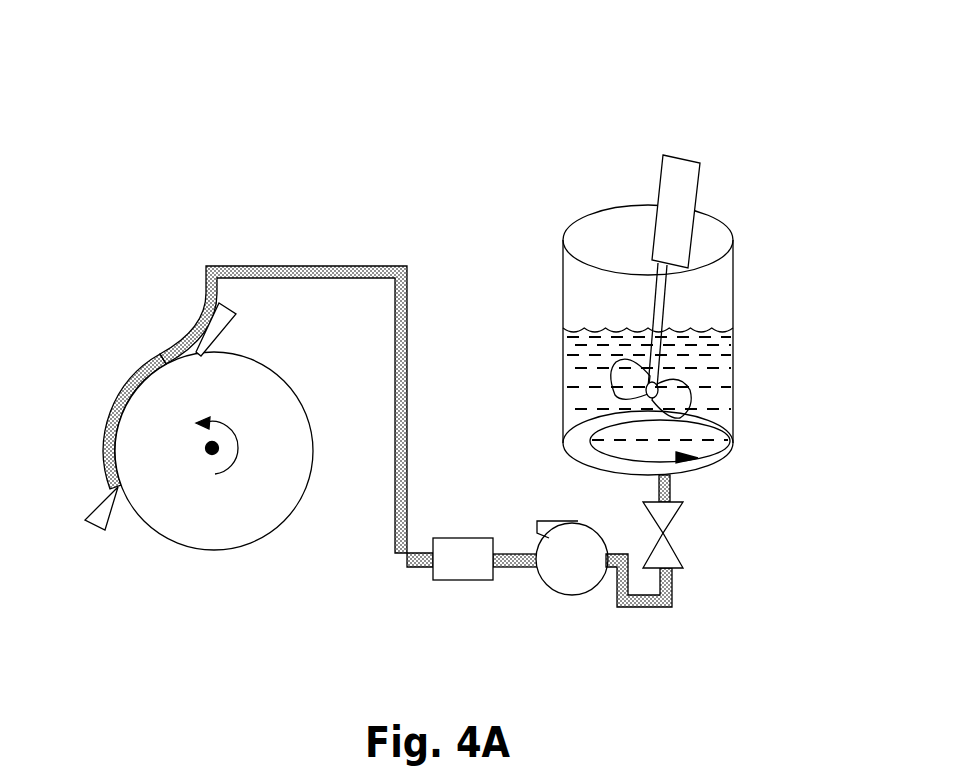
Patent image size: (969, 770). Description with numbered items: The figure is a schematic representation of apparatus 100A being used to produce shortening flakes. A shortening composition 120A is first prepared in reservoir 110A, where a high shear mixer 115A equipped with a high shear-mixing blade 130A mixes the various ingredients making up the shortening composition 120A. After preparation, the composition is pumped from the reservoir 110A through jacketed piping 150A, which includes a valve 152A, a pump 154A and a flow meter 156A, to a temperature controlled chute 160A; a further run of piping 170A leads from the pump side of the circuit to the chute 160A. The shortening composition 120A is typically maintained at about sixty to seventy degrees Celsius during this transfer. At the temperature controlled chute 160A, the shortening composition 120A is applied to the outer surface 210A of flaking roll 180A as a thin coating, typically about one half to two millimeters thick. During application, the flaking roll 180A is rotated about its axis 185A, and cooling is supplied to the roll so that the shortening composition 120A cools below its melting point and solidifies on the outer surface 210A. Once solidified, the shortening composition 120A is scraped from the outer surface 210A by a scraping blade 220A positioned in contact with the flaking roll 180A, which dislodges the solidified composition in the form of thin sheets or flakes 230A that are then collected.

The apparatus 100A is at (497, 86).
The reservoir 110A is at (551, 265).
The high shear mixer 115A is at (680, 157).
The shortening composition 120A is at (722, 400).
The high shear-mixing blade 130A is at (660, 366).
The jacketed piping 150A is at (643, 608).
The valve 152A is at (668, 533).
The pump 154A is at (565, 597).
The flow meter 156A is at (460, 548).
The temperature controlled chute 160A is at (236, 316).
The conduit 170A is at (300, 266).
The flaking roll 180A is at (257, 551).
The axis 185A is at (206, 443).
The outer surface 210A is at (122, 387).
The scraping blade 220A is at (95, 535).
The flakes 230A is at (85, 515).